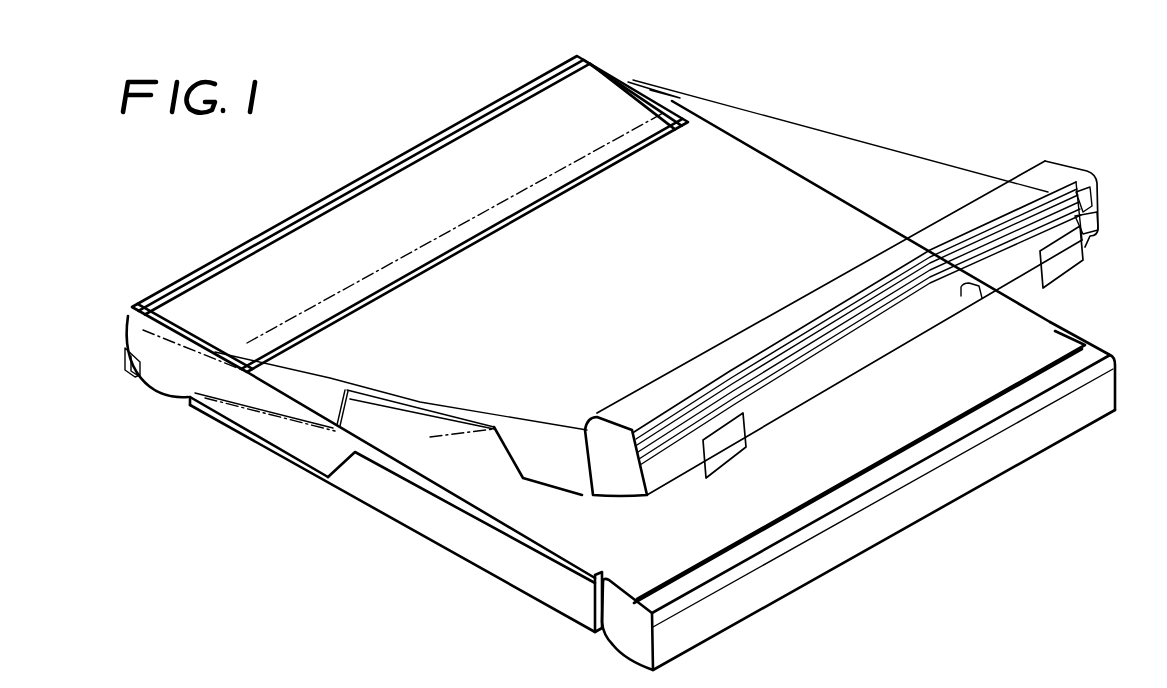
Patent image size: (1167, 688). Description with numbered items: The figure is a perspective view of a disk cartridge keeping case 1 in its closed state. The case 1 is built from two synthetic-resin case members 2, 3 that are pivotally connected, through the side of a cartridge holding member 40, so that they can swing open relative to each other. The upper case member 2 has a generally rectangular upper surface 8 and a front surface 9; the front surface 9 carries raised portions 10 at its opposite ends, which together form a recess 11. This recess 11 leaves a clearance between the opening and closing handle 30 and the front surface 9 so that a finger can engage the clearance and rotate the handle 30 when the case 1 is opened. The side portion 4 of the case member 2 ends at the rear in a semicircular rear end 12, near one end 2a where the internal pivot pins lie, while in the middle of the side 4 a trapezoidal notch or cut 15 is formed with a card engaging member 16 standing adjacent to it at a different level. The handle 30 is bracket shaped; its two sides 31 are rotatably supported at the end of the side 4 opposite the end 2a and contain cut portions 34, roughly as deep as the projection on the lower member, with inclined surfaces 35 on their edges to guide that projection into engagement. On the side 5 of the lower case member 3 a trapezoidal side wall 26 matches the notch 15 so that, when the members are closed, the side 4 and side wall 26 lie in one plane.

The disk cartridge keeping case 1 is at (764, 98).
The case member 2 is at (783, 168).
The one end of the case member 2a is at (128, 340).
The case member 3 is at (393, 523).
The side portion 4 is at (228, 395).
The side 5 is at (302, 472).
The upper surface 8 is at (900, 237).
The front surface 9 is at (852, 353).
The raised portions 10 is at (723, 447).
The recess 11 is at (970, 302).
The rear end 12 is at (163, 377).
The trapezoidal notch or cut 15 is at (427, 440).
The card engaging member 16 is at (463, 435).
The trapezoidal side wall 26 is at (375, 478).
The opening and closing handle 30 is at (1037, 167).
The sides of the handle 31 is at (607, 473).
The cut portions 34 is at (1100, 227).
The inclined surfaces 35 is at (1090, 200).
The cartridge holding member 40 is at (465, 148).